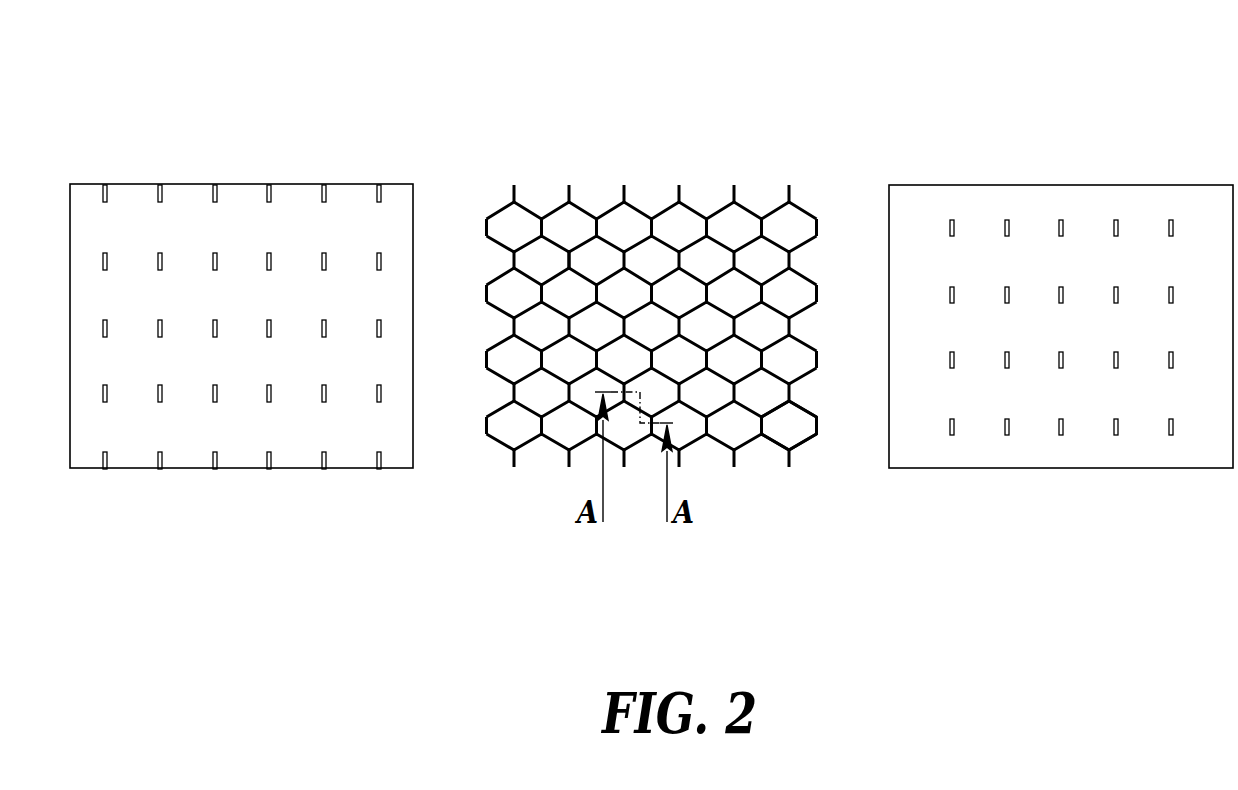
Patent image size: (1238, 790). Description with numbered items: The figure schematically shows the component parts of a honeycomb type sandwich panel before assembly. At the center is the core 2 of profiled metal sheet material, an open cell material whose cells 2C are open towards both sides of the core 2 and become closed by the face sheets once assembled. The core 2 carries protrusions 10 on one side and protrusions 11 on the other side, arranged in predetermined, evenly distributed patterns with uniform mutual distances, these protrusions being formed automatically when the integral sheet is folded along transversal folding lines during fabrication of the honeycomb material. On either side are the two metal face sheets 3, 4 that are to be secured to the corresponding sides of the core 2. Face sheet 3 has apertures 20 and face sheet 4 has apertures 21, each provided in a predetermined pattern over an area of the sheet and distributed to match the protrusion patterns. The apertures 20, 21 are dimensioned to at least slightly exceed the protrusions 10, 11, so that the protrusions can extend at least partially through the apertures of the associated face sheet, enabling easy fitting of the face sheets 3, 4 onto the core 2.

The core 2 is at (659, 185).
The cells 2C is at (793, 430).
The metal face sheet 3 is at (146, 168).
The metal face sheet 4 is at (1171, 166).
The protrusions 10 is at (566, 250).
The protrusions 11 is at (763, 216).
The apertures 20 is at (324, 258).
The apertures 21 is at (1007, 222).